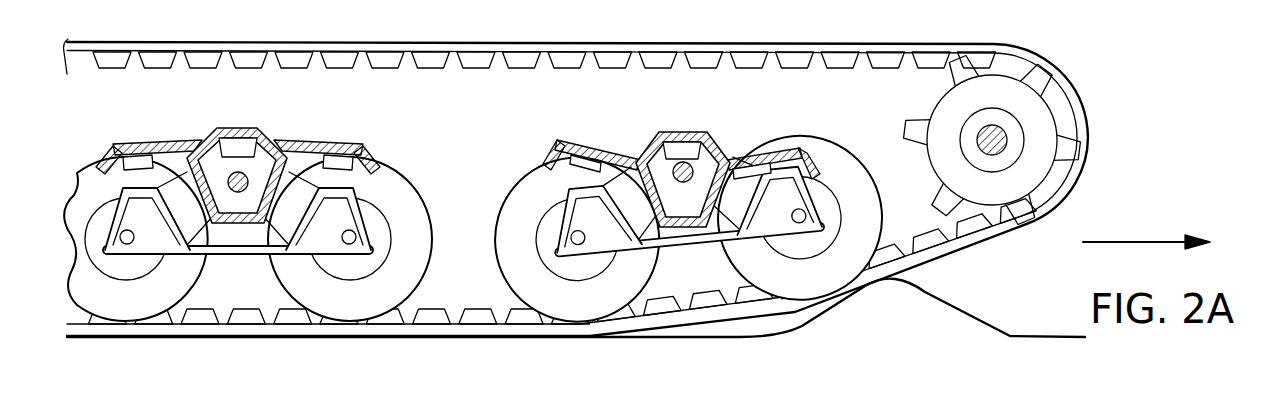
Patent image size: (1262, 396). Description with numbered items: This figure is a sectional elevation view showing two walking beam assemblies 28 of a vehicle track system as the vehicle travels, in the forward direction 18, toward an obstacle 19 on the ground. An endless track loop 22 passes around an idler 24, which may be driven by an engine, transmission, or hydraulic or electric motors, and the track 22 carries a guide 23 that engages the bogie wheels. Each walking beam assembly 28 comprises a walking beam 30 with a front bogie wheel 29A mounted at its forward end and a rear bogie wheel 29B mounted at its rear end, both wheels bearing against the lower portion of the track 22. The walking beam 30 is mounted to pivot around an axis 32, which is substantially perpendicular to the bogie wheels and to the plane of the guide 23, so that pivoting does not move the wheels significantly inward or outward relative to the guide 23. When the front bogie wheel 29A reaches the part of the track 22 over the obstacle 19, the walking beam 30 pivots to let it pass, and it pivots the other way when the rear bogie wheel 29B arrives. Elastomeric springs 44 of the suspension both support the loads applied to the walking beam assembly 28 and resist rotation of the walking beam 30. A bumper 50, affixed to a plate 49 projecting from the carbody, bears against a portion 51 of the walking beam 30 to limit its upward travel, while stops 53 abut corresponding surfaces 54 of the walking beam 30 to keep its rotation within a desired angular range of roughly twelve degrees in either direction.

The direction 18 is at (1133, 241).
The obstacle 19 is at (946, 290).
The endless track loop 22 is at (416, 341).
The guide 23 is at (478, 304).
The idler 24 is at (1047, 147).
The walking beam assembly 28 is at (496, 165).
The front bogie wheel 29A is at (842, 278).
The rear bogie wheel 29B is at (580, 311).
The walking beam 30 is at (686, 252).
The axis 32 is at (664, 163).
The elastomeric springs 44 is at (635, 215).
The plate 49 is at (240, 127).
The bumper 50 is at (210, 143).
The portion of walking beam 51 is at (270, 145).
The stops 53 is at (777, 172).
The surfaces of walking beam 54 is at (827, 190).